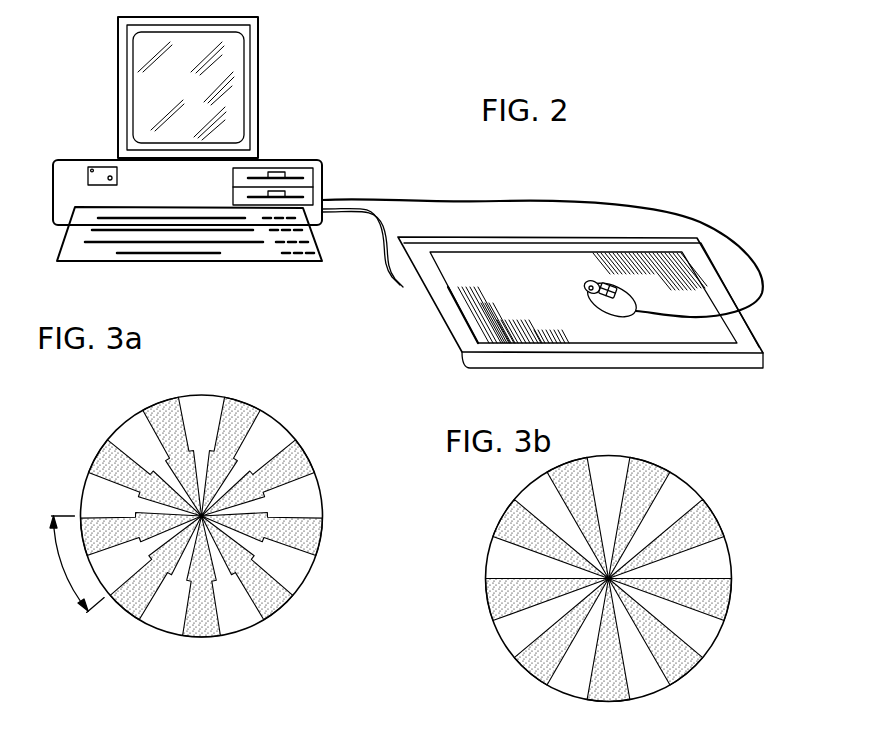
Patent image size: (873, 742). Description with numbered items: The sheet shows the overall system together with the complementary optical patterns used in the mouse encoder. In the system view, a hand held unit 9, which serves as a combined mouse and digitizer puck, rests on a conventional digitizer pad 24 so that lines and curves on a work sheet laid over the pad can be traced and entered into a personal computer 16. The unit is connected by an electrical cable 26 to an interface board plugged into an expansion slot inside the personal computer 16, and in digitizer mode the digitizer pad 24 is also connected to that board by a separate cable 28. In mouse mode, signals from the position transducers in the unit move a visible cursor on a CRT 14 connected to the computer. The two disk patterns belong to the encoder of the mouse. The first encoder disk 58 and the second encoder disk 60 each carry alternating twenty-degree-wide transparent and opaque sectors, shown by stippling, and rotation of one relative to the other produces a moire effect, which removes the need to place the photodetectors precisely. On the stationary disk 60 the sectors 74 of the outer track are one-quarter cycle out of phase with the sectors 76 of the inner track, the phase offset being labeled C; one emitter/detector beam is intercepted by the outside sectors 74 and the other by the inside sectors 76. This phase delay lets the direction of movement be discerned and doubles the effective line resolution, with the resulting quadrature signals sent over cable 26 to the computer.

In FIG. 2, the CRT 14 is at (243, 45).
In FIG. 2, the personal computer 16 is at (292, 162).
In FIG. 2, the electrical cable 26 is at (586, 198).
In FIG. 2, the cable 28 is at (384, 266).
In FIG. 2, the digitizer pad 24 is at (678, 330).
In FIG. 2, the hand held unit 9 is at (598, 298).
In FIG. 3A, the second encoder disk 60 is at (211, 530).
In FIG. 3A, the sectors of the outer track 74 is at (297, 473).
In FIG. 3A, the sectors of the inner track 76 is at (173, 578).
In FIG. 3B, the first encoder disk 58 is at (714, 493).